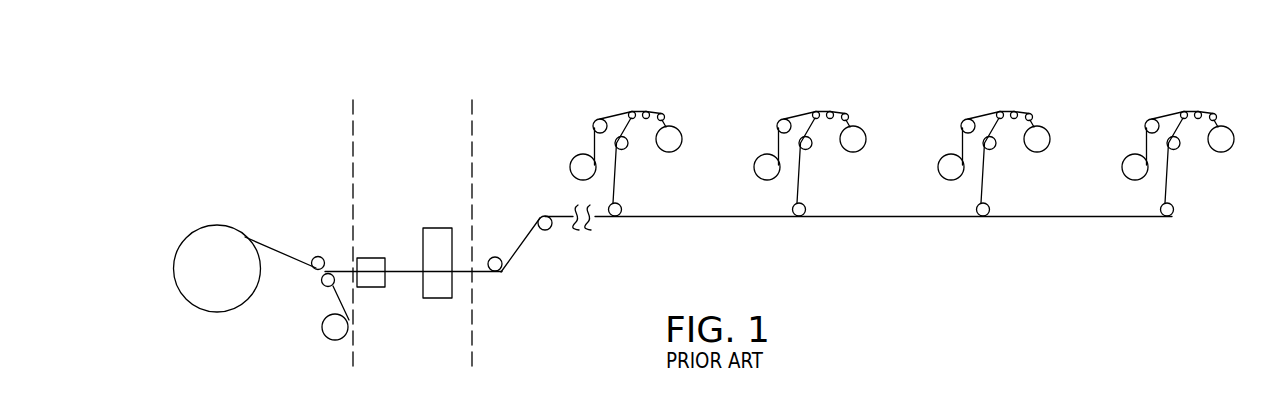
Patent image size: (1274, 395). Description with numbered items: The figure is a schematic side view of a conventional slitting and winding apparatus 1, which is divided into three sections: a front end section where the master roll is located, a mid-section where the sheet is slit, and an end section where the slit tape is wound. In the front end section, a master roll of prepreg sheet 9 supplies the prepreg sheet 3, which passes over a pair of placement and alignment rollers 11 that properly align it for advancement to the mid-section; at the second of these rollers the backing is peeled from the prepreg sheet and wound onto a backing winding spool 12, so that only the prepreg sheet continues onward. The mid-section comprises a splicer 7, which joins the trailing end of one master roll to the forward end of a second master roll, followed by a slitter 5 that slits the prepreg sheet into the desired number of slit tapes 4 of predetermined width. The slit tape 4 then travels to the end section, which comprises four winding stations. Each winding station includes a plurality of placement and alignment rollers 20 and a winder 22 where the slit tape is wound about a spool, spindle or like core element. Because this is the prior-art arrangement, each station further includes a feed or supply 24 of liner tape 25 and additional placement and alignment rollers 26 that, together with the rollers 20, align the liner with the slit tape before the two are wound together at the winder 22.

The slitting apparatus 1 is at (285, 137).
The prepreg sheet 3 is at (278, 250).
The slit tape 4 is at (519, 246).
The slitter 5 is at (447, 290).
The splicer 7 is at (373, 280).
The master roll of prepreg sheet 9 is at (227, 303).
The placement and alignment rollers 11 is at (318, 257).
The backing winding spool 12 is at (325, 328).
The placement and alignment rollers 20 is at (661, 113).
The winder 22 is at (680, 126).
The feed or supply of liner tape 24 is at (575, 177).
The liner tape 25 is at (617, 114).
The placement and alignment rollers 26 is at (593, 123).